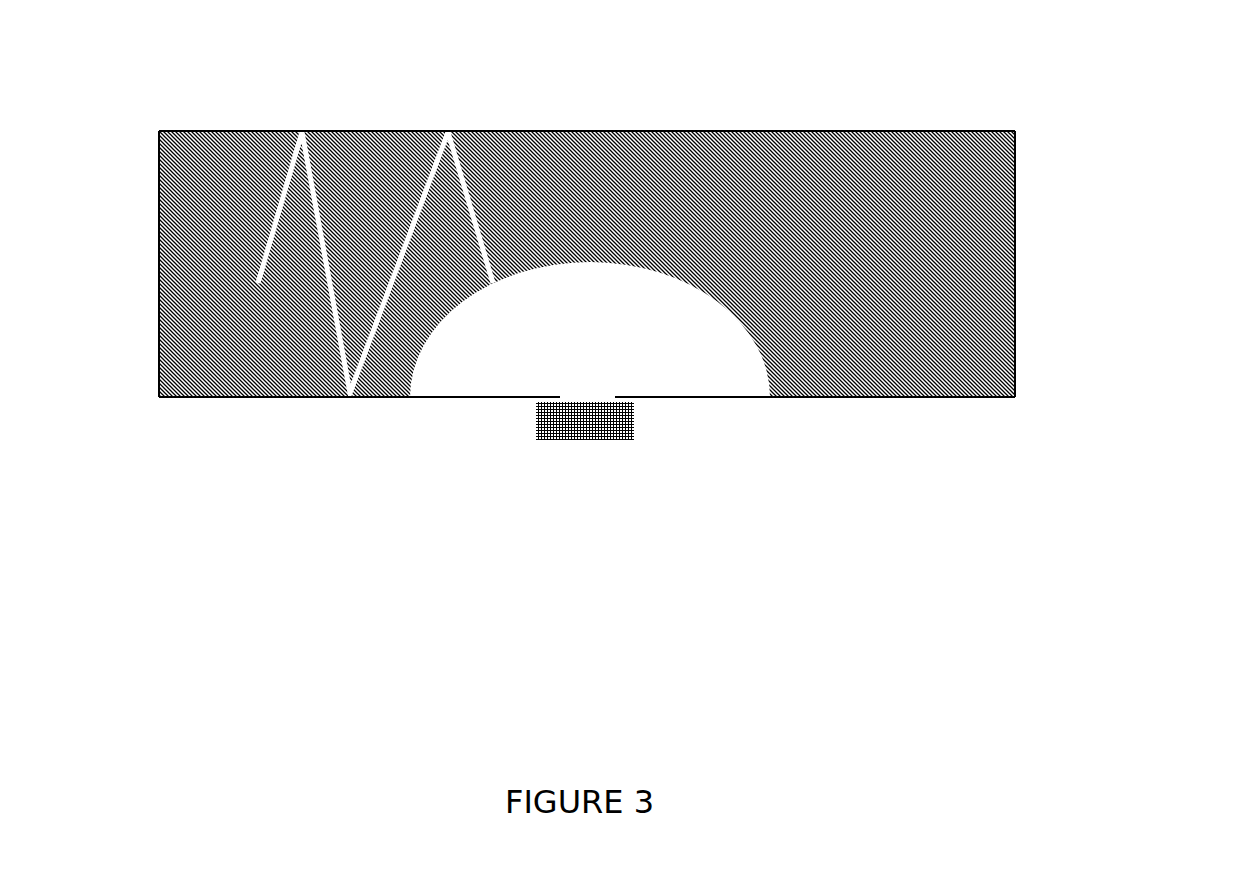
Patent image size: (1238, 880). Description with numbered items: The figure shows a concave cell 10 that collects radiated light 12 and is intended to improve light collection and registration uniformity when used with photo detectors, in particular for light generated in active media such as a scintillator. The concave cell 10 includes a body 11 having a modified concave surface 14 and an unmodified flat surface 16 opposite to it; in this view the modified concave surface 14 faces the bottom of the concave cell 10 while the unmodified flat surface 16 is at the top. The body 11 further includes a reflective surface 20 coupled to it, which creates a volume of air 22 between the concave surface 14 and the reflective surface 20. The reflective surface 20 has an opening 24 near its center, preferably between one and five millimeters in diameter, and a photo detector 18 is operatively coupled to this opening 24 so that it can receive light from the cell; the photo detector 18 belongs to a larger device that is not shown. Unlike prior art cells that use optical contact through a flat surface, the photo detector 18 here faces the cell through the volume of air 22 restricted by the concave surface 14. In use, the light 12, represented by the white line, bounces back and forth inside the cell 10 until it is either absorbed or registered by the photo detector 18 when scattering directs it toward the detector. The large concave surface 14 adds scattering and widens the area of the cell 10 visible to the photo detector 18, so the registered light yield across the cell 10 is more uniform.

The concave cell 10 is at (651, 335).
The body 11 is at (874, 247).
The radiated light 12 is at (257, 205).
The modified concave surface 14 is at (642, 247).
The unmodified flat surface 16 is at (492, 122).
The photo detector 18 is at (609, 455).
The reflective surface 20 is at (443, 413).
The volume of air 22 is at (692, 374).
The opening 24 is at (581, 372).